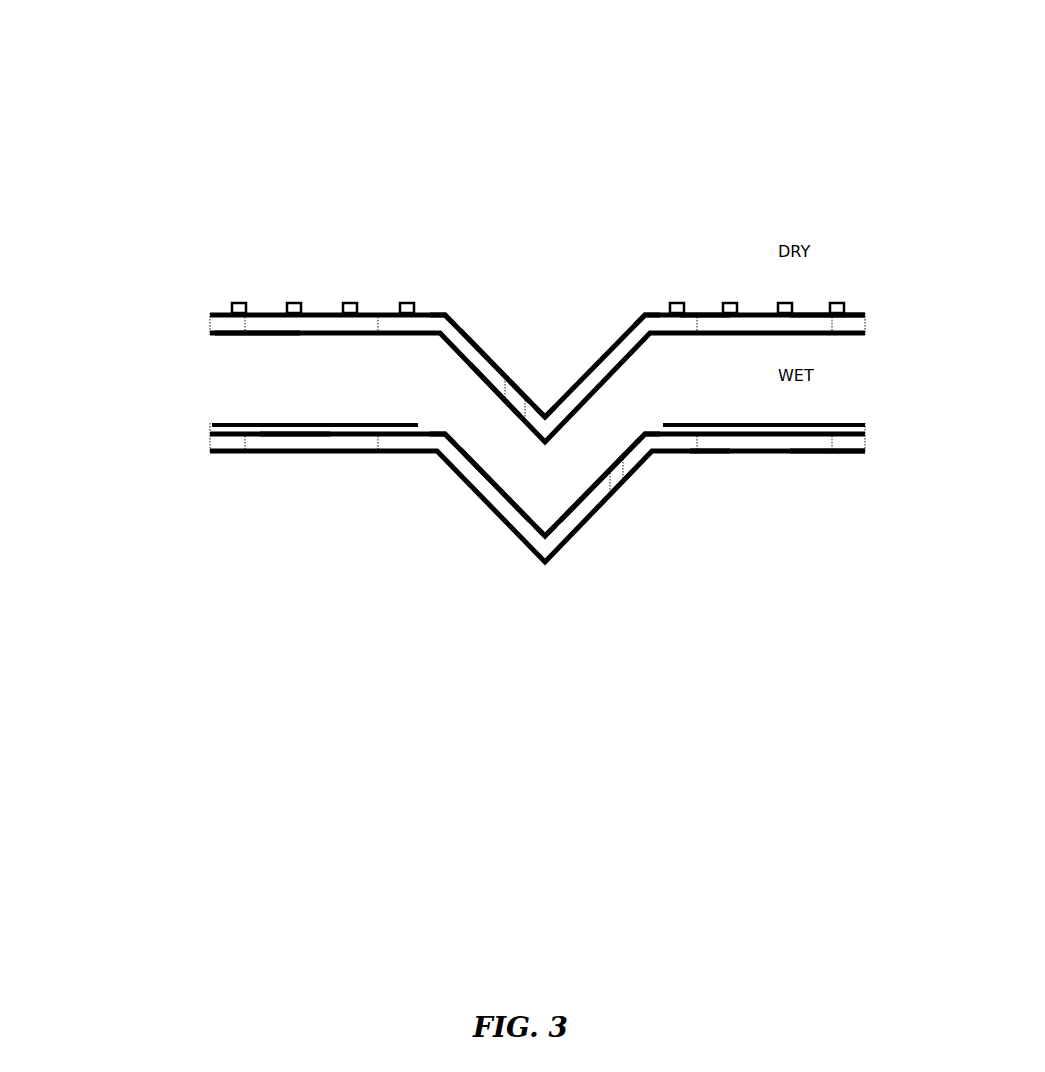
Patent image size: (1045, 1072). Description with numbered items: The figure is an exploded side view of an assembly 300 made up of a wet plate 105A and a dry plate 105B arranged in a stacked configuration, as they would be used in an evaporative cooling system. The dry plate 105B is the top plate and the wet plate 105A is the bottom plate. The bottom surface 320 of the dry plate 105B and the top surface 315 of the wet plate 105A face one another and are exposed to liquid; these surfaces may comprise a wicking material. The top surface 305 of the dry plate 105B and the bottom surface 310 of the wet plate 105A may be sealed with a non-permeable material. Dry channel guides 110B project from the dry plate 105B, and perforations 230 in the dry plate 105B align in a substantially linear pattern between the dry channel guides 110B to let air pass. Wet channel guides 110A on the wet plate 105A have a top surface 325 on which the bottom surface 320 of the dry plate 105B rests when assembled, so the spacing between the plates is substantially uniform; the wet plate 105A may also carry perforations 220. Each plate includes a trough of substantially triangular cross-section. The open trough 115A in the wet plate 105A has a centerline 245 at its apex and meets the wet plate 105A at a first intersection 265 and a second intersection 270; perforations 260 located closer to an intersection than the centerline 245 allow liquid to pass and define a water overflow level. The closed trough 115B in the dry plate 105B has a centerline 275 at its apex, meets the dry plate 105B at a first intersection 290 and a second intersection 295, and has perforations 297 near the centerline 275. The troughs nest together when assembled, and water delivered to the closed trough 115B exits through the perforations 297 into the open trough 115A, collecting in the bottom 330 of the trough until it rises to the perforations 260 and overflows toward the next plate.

The assembly 300 is at (182, 98).
The wet plate 105A is at (225, 465).
The dry plate 105B is at (217, 320).
The wet channel guides 110A is at (295, 428).
The dry channel guides 110B is at (298, 300).
The open trough 115A is at (497, 478).
The closed trough 115B is at (505, 327).
The perforations 220 is at (707, 457).
The perforations 230 is at (703, 307).
The centerline 245 is at (543, 515).
The perforations 260 is at (622, 490).
The first intersection 265 is at (443, 428).
The second intersection 270 is at (645, 420).
The centerline 275 is at (548, 405).
The first intersection 290 is at (445, 305).
The second intersection 295 is at (648, 305).
The perforations 297 is at (518, 385).
The top surface 305 is at (803, 305).
The bottom surface 310 is at (815, 468).
The top surface 315 is at (810, 427).
The bottom surface 320 is at (238, 340).
The top surface 325 is at (363, 420).
The bottom 330 is at (540, 487).